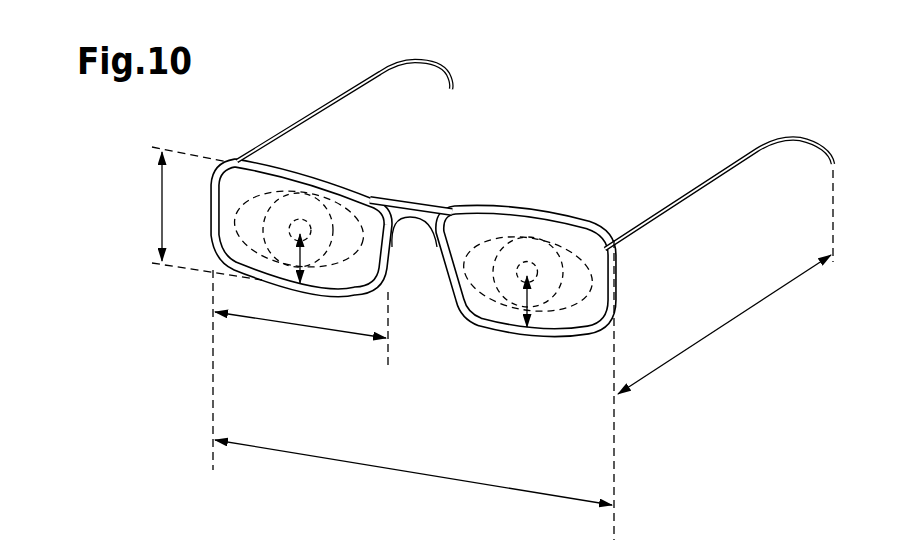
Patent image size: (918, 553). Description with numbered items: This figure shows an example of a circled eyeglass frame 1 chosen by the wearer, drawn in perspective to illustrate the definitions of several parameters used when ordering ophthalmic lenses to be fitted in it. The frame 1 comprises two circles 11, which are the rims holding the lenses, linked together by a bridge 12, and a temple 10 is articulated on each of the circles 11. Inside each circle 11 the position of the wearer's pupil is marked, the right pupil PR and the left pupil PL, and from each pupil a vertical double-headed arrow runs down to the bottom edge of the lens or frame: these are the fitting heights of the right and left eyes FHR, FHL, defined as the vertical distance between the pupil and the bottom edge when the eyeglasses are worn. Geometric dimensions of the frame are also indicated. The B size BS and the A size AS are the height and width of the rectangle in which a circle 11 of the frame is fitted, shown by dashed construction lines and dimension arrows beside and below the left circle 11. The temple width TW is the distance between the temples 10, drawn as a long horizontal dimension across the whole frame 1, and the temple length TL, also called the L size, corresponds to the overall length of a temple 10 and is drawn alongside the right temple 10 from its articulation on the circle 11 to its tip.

The frame 1 is at (524, 184).
The temple 10 is at (302, 112).
The circle 11 is at (372, 195).
The bridge 12 is at (412, 217).
The pupil of the left eye PL is at (300, 218).
The pupil of the right eye PR is at (527, 260).
The fitting height of the left eye FHL is at (303, 258).
The fitting height of the right eye FHR is at (530, 307).
The B size BS is at (161, 200).
The A size AS is at (276, 322).
The temple width TW is at (415, 468).
The temple length TL is at (716, 330).